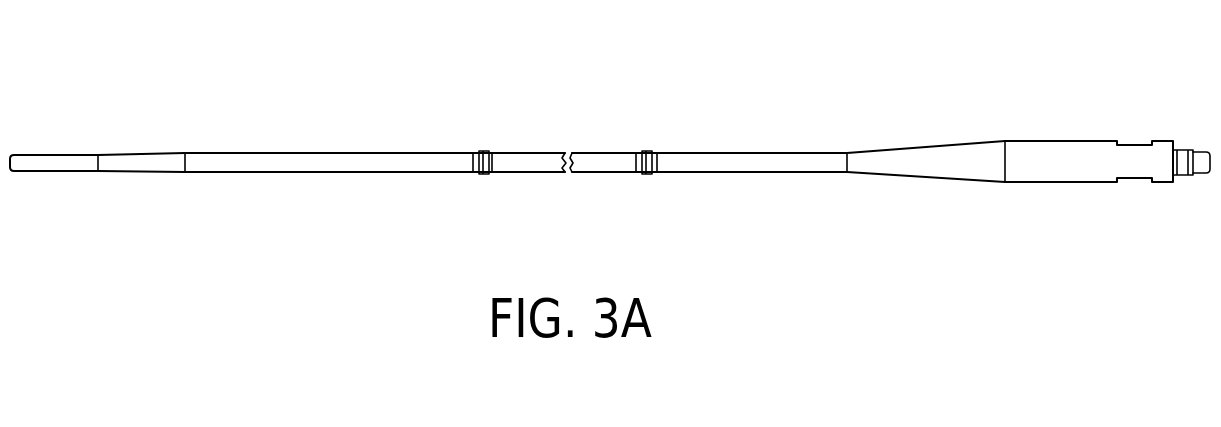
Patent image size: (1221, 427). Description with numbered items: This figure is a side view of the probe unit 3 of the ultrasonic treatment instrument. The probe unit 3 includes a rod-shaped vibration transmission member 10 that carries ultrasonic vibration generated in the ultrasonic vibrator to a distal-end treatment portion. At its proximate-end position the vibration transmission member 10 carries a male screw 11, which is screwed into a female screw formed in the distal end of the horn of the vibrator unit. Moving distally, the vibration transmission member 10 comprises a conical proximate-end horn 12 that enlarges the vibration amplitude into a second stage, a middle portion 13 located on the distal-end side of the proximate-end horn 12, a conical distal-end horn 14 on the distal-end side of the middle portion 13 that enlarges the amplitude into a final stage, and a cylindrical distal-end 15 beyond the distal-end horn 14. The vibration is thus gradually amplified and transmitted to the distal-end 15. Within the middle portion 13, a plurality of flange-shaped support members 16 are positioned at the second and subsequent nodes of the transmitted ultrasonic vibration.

The probe unit 3 is at (312, 82).
The vibration transmission member 10 is at (762, 152).
The male screw 11 is at (1184, 150).
The proximate-end horn 12 is at (933, 170).
The middle portion 13 is at (847, 192).
The distal-end horn 14 is at (143, 163).
The distal-end 15 is at (52, 163).
The flange-shaped support member 16 is at (484, 150).